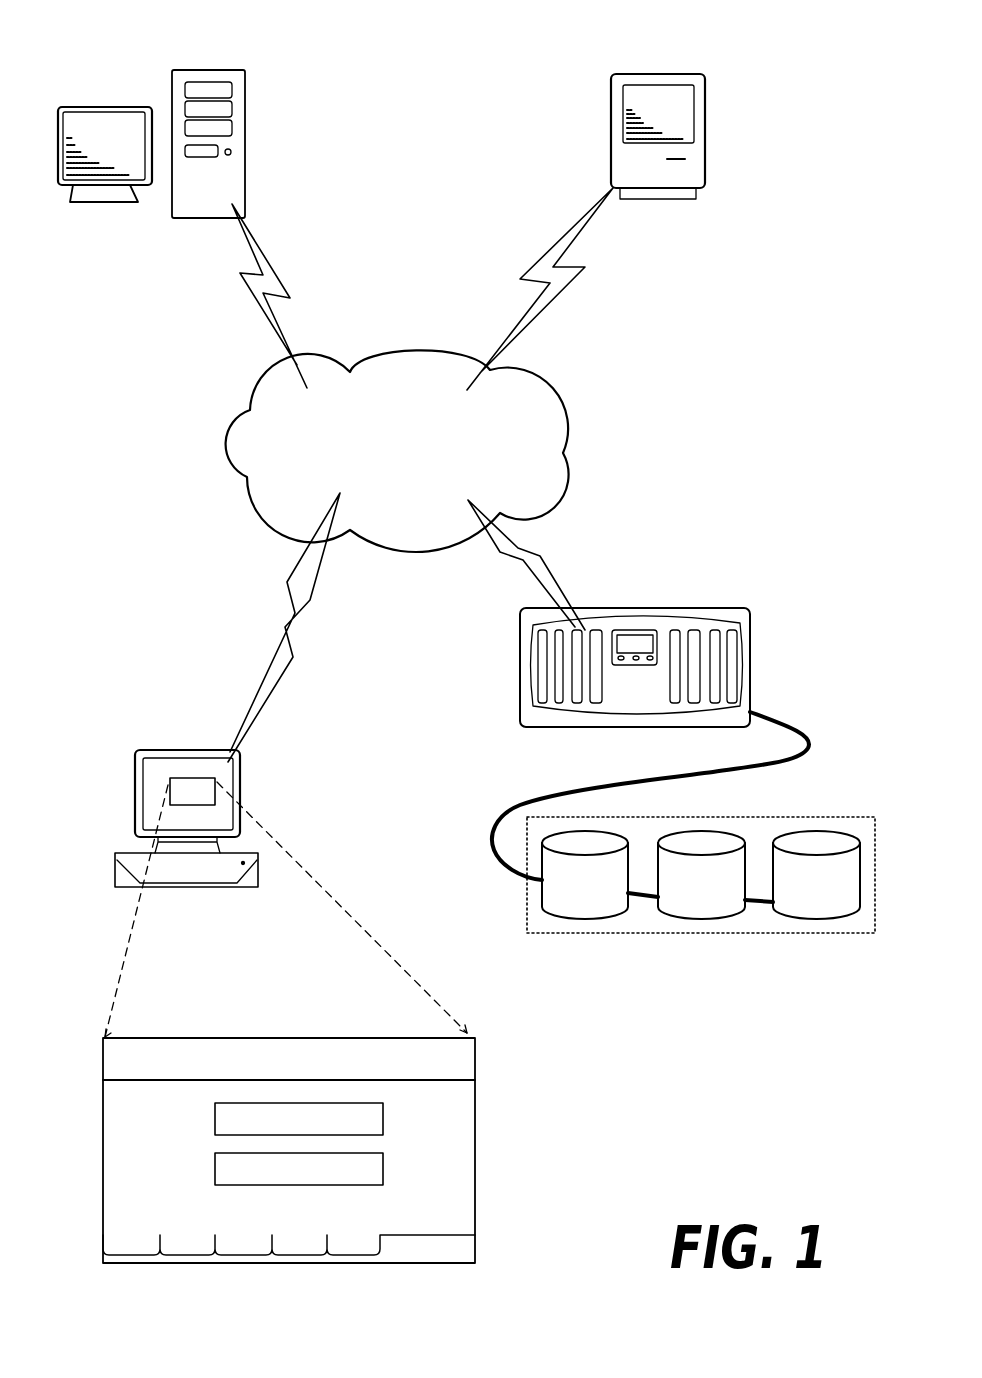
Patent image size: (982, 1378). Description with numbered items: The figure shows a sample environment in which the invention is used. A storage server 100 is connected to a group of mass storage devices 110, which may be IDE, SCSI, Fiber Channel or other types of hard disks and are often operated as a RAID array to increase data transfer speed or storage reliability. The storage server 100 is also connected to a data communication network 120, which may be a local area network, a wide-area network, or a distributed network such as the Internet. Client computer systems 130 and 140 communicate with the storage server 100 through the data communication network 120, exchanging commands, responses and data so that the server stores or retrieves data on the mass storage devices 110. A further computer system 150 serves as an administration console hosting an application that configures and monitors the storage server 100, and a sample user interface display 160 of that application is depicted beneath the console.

The storage server 100 is at (750, 612).
The mass storage devices 110 is at (610, 935).
The data communication network 120 is at (540, 497).
The client computer system 130 is at (137, 102).
The client computer system 140 is at (705, 190).
The administration console computer system 150 is at (137, 752).
The user interface display 160 is at (475, 1263).